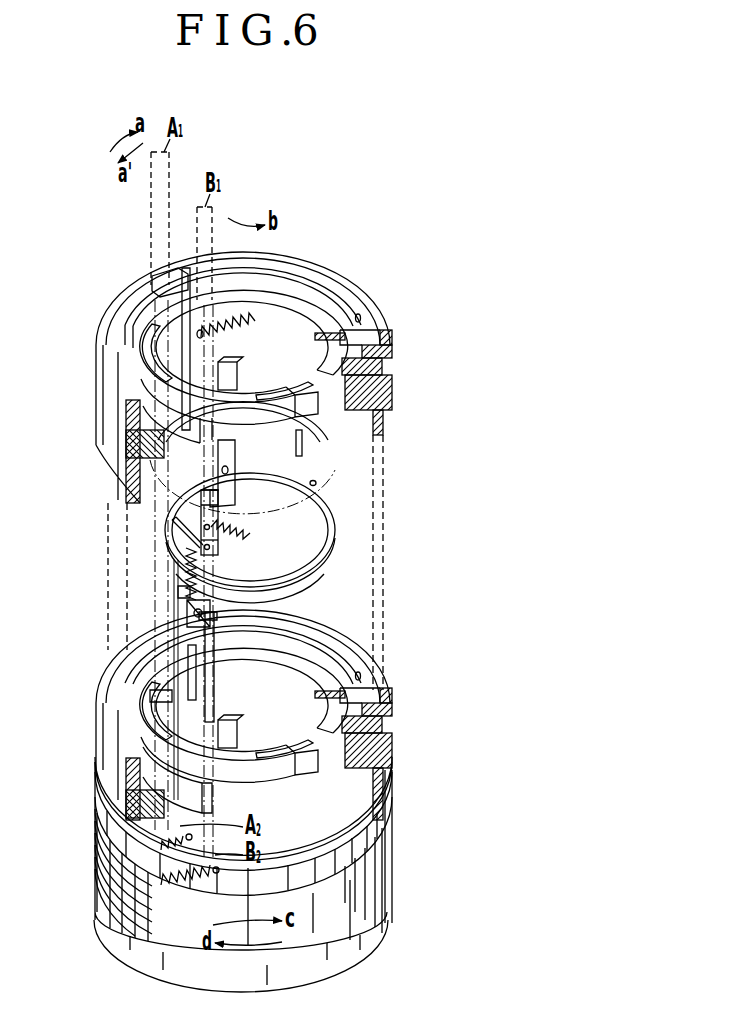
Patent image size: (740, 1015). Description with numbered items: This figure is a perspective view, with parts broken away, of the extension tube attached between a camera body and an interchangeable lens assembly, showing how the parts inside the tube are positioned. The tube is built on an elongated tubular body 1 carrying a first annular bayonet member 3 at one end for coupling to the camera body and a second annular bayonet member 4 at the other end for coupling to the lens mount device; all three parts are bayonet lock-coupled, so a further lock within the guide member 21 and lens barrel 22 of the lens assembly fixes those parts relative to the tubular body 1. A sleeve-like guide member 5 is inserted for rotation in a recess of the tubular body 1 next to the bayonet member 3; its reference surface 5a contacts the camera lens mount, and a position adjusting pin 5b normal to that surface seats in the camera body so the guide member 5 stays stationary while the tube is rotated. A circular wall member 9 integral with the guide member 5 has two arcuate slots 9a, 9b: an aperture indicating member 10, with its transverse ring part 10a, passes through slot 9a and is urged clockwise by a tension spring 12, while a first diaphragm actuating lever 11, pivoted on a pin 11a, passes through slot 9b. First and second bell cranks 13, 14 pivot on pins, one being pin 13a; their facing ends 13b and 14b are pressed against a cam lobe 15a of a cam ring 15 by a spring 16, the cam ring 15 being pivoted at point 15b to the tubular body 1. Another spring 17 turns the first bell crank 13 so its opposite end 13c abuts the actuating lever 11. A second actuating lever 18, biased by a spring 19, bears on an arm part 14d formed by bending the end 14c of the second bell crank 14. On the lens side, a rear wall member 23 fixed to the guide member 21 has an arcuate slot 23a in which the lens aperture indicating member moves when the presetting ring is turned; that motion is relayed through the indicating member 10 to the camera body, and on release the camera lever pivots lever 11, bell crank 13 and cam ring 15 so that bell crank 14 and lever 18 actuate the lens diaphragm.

The tubular body 1 is at (372, 390).
The first annular bayonet member 3 is at (376, 338).
The second annular bayonet member 4 is at (165, 746).
The guide member 5 is at (380, 366).
The reference surface 5a is at (335, 327).
The position adjusting pin 5b is at (362, 319).
The wall member 9 is at (348, 326).
The slot 9a is at (175, 345).
The slot 9b is at (288, 387).
The aperture indicating member 10 is at (194, 292).
The ring part 10a is at (175, 468).
The first diaphragm actuating lever 11 is at (233, 373).
The pin 11a is at (228, 478).
The tension spring 12 is at (240, 322).
The first bell crank 13 is at (197, 532).
The pin 13a is at (216, 548).
The end of first bell crank 13b is at (185, 548).
The opposite end of first bell crank 13c is at (205, 500).
The second bell crank 14 is at (183, 606).
The end of second bell crank 14b is at (178, 591).
The end of second bell crank 14c is at (152, 694).
The arm part 14d is at (212, 630).
The cam ring 15 is at (334, 530).
The cam lobe 15a is at (180, 575).
The pivot point 15b is at (316, 482).
The spring 16 is at (208, 593).
The spring 17 is at (246, 533).
The second actuating lever 18 is at (224, 732).
The spring 19 is at (186, 663).
The guide member 21 is at (370, 745).
The lens barrel 22 is at (100, 752).
The rear wall member 23 is at (352, 688).
The arcuate slot 23a is at (152, 718).